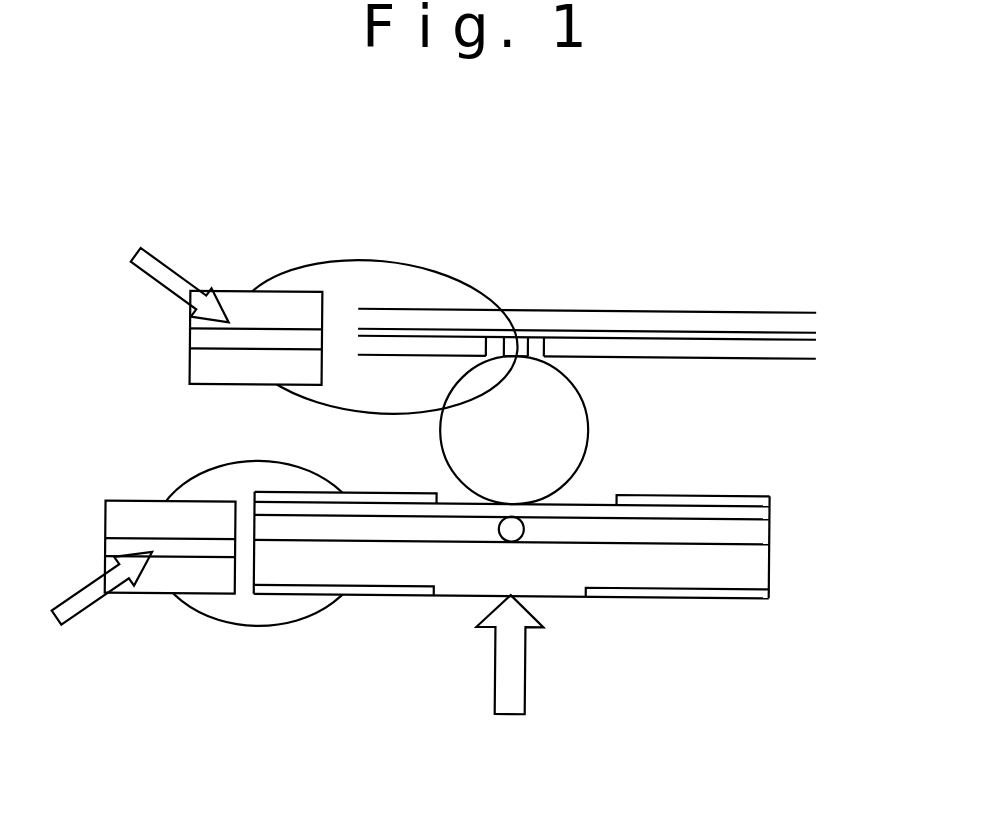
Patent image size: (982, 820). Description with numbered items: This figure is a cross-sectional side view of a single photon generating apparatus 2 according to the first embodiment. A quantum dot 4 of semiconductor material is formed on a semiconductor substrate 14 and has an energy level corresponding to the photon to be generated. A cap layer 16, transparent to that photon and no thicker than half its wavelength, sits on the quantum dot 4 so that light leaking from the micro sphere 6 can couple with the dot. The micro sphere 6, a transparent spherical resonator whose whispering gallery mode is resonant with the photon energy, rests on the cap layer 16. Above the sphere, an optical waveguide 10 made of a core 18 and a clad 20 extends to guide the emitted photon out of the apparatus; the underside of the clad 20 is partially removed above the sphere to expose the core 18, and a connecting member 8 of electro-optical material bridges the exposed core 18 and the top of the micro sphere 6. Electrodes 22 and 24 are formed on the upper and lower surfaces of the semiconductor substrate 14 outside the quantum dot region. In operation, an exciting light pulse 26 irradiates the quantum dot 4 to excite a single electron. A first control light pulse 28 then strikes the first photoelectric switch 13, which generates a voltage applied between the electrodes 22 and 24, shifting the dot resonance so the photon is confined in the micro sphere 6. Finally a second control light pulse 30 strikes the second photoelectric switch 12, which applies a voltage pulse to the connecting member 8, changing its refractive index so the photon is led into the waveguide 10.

The single photon generating apparatus 2 is at (253, 192).
The quantum dot 4 is at (519, 537).
The micro sphere 6 is at (587, 441).
The connecting member 8 is at (513, 347).
The optical waveguide 10 is at (694, 310).
The second photoelectric switch 12 is at (188, 369).
The first photoelectric switch 13 is at (105, 520).
The semiconductor substrate 14 is at (765, 573).
The cap layer 16 is at (765, 512).
The core 18 is at (790, 333).
The clad 20 is at (807, 349).
The electrode 22 is at (720, 498).
The electrode 24 is at (720, 597).
The exciting light pulse 26 is at (497, 670).
The first control light pulse 28 is at (90, 609).
The second control light pulse 30 is at (172, 264).